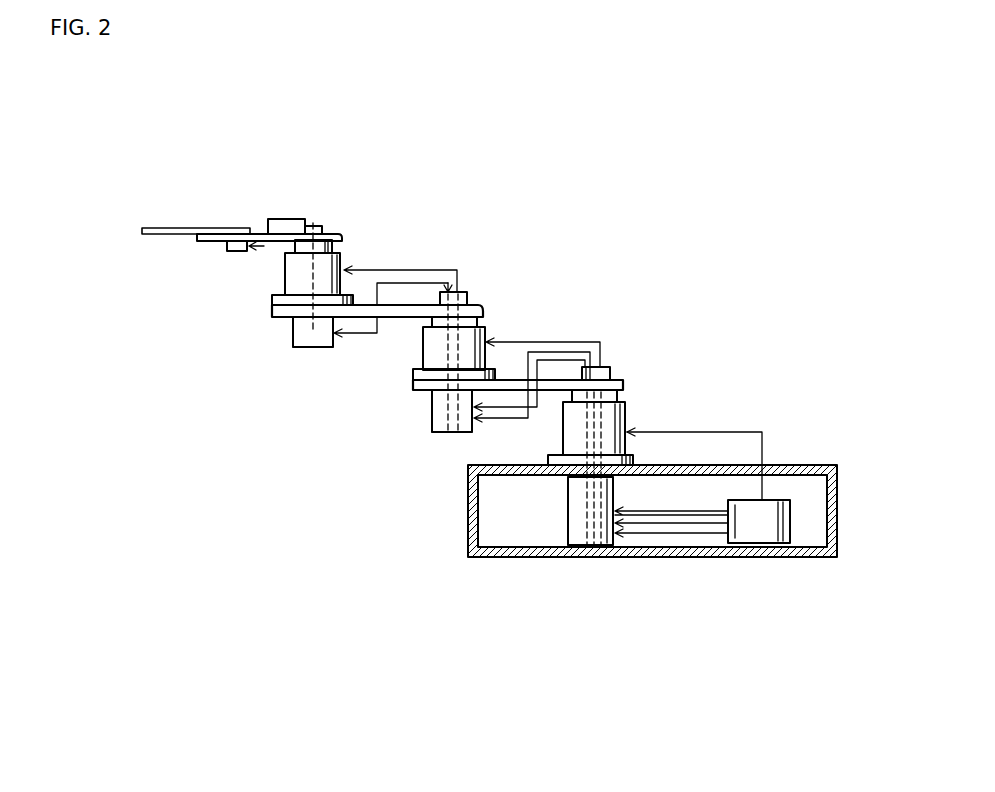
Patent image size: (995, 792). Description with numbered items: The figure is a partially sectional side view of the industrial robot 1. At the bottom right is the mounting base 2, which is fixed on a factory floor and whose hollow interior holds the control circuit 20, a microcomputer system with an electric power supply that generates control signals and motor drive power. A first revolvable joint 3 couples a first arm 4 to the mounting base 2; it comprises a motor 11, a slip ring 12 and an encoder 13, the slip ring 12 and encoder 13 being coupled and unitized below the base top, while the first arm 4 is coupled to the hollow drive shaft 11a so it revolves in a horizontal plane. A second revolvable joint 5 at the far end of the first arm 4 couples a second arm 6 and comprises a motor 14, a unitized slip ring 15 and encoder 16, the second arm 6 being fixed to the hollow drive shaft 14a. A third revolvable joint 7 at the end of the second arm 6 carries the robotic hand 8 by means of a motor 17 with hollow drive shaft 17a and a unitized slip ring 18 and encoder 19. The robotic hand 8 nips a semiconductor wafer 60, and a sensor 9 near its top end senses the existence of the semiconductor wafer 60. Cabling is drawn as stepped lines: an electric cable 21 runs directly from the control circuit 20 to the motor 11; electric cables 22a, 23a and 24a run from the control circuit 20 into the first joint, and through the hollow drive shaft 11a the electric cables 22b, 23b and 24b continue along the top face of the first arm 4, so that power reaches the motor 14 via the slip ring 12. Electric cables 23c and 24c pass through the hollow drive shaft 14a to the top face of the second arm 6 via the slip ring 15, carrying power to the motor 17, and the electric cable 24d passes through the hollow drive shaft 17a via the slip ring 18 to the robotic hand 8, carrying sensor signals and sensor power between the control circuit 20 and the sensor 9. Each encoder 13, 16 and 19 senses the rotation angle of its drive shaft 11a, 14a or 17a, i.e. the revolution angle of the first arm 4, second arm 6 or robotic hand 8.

The industrial robot 1 is at (272, 98).
The mounting base 2 is at (818, 558).
The first revolvable joint 3 is at (574, 505).
The first arm 4 is at (510, 388).
The second revolvable joint 5 is at (430, 380).
The second arm 6 is at (400, 312).
The third revolvable joint 7 is at (285, 308).
The robotic hand 8 is at (200, 241).
The sensor 9 is at (230, 251).
The motor 11 is at (573, 517).
The drive shaft 11a is at (612, 390).
The slip ring 12 is at (628, 537).
The encoder 13 is at (590, 511).
The motor 14 is at (430, 360).
The drive shaft 14a is at (467, 320).
The slip ring 15 is at (440, 413).
The encoder 16 is at (452, 411).
The motor 17 is at (293, 273).
The drive shaft 17a is at (328, 247).
The slip ring 18 is at (300, 338).
The encoder 19 is at (313, 332).
The control circuit 20 is at (785, 498).
The electric cable 21 is at (733, 431).
The electric cable 22a is at (667, 520).
The electric cable 23a is at (697, 530).
The electric cable 24a is at (715, 540).
The electric cable 22b is at (517, 340).
The electric cable 23b is at (583, 350).
The electric cable 24b is at (600, 358).
The electric cable 23c is at (377, 270).
The electric cable 24c is at (420, 283).
The electric cable 24d is at (285, 218).
The semiconductor wafer 60 is at (173, 228).